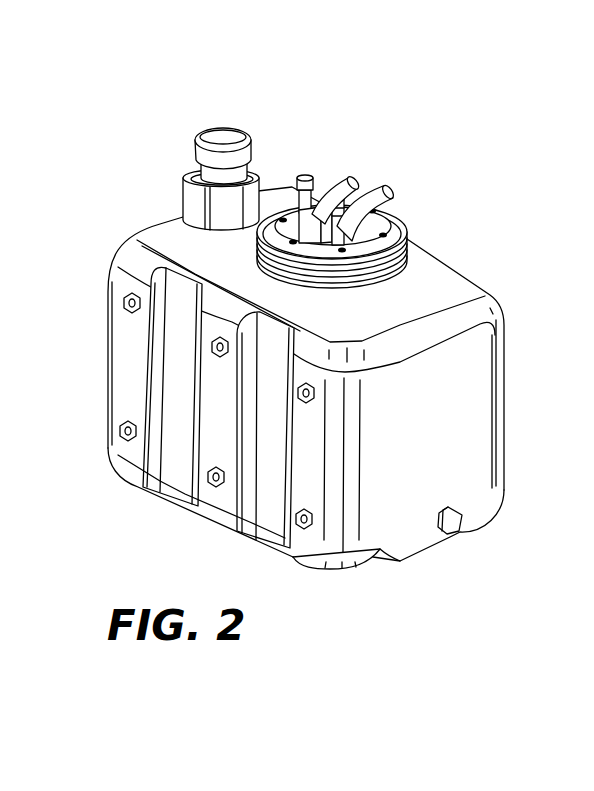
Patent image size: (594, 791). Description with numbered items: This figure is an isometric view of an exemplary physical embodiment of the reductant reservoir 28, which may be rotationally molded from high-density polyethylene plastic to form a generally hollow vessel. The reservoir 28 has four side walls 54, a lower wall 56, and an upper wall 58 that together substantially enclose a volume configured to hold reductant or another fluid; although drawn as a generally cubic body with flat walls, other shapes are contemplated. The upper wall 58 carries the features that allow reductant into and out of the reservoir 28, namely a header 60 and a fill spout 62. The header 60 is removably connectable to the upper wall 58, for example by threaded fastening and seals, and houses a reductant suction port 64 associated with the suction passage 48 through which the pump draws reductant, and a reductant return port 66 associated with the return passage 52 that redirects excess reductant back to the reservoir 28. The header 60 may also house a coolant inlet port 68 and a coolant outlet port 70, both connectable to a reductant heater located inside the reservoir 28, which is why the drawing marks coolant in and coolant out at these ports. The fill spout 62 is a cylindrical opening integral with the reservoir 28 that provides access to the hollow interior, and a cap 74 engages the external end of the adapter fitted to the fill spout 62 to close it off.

The reservoir 28 is at (396, 86).
The suction passage 48 is at (338, 214).
The return passage 52 is at (305, 181).
The side walls 54 is at (118, 380).
The lower wall 56 is at (307, 565).
The upper wall 58 is at (457, 292).
The header 60 is at (449, 233).
The fill spout 62 is at (133, 195).
The reductant suction port 64 is at (342, 205).
The reductant return port 66 is at (257, 233).
The coolant inlet port 68 is at (391, 210).
The coolant outlet port 70 is at (435, 146).
The cap 74 is at (222, 132).